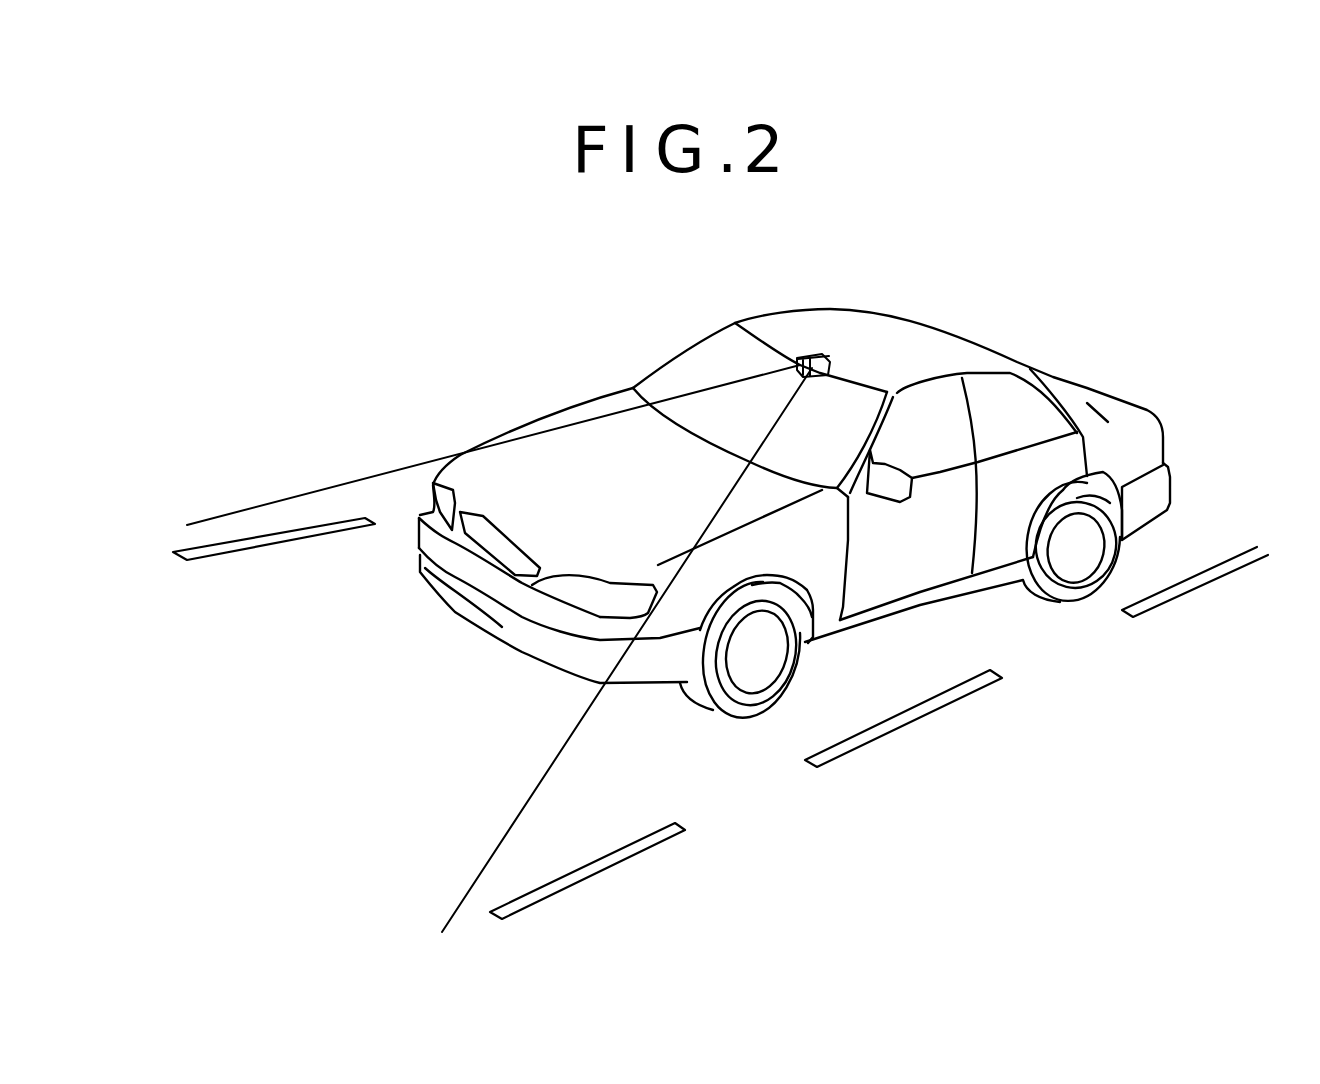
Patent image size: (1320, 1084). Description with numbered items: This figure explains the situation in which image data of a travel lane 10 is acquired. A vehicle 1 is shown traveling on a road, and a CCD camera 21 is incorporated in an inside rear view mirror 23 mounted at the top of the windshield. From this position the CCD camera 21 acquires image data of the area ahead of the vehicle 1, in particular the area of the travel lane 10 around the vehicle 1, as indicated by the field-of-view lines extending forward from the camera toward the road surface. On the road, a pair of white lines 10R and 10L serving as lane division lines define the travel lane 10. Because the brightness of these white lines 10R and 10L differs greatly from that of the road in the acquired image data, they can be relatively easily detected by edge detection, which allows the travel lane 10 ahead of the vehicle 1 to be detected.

The vehicle 1 is at (958, 337).
The travel lane 10 is at (720, 718).
The white line 10R is at (267, 537).
The white line 10L is at (928, 707).
The CCD camera 21 is at (813, 352).
The inside rear view mirror 23 is at (832, 352).